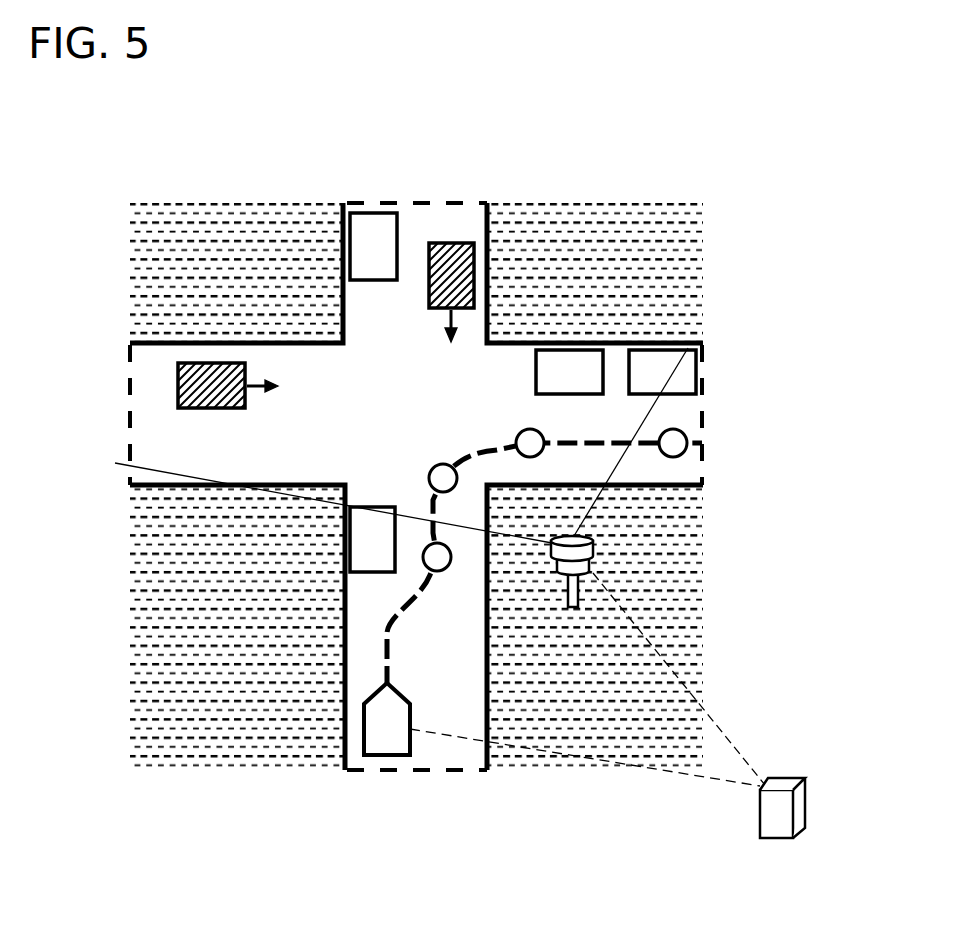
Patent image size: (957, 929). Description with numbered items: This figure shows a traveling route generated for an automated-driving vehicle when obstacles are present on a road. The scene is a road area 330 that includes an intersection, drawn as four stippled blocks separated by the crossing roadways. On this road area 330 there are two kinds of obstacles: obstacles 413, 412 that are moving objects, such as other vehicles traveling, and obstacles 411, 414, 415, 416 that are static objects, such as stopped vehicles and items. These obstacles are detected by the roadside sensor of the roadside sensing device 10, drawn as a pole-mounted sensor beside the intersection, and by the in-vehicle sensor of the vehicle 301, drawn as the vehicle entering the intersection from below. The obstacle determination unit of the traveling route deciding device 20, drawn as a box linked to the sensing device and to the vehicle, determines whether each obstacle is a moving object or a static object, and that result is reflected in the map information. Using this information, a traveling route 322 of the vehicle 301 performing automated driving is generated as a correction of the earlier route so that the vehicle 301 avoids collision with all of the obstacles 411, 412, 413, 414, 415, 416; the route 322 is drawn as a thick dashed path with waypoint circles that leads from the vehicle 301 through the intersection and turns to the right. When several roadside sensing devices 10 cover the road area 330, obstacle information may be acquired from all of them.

The road area 330 is at (296, 365).
The obstacle 411 is at (373, 225).
The obstacle 412 is at (447, 243).
The obstacle 413 is at (178, 400).
The obstacle 414 is at (573, 357).
The obstacle 415 is at (690, 370).
The obstacle 416 is at (370, 510).
The traveling route 322 is at (477, 450).
The vehicle 301 is at (380, 757).
The roadside sensing device 10 is at (593, 555).
The traveling route deciding device 20 is at (785, 778).